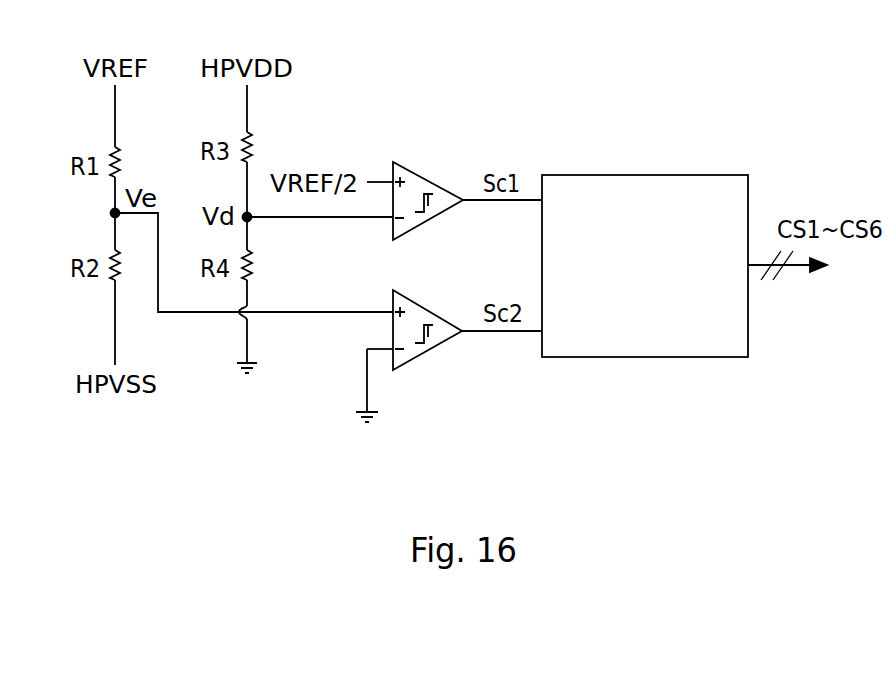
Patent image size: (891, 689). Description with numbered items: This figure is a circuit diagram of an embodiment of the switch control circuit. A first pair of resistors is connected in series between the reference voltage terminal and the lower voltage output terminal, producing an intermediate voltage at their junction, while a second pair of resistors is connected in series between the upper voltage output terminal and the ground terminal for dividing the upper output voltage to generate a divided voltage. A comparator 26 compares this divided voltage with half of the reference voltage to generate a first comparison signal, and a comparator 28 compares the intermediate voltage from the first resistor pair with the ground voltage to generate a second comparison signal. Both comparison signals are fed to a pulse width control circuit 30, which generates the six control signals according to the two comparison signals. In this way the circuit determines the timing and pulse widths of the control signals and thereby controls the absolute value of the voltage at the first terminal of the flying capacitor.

The comparator 26 is at (426, 179).
The comparator 28 is at (426, 309).
The pulse width control circuit 30 is at (645, 175).